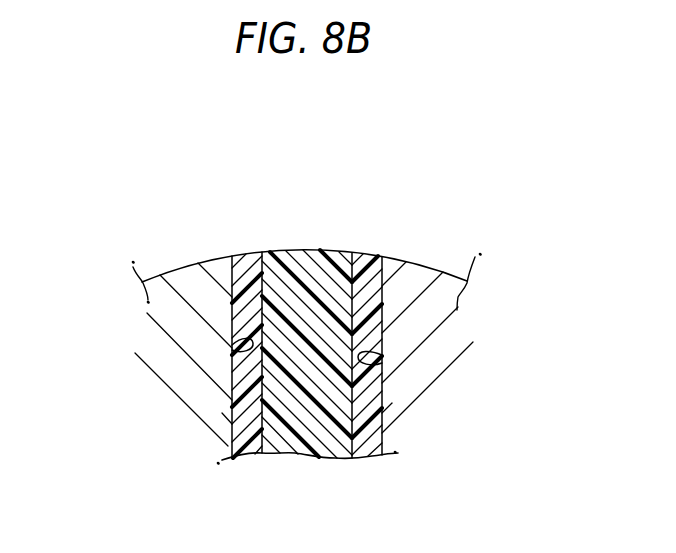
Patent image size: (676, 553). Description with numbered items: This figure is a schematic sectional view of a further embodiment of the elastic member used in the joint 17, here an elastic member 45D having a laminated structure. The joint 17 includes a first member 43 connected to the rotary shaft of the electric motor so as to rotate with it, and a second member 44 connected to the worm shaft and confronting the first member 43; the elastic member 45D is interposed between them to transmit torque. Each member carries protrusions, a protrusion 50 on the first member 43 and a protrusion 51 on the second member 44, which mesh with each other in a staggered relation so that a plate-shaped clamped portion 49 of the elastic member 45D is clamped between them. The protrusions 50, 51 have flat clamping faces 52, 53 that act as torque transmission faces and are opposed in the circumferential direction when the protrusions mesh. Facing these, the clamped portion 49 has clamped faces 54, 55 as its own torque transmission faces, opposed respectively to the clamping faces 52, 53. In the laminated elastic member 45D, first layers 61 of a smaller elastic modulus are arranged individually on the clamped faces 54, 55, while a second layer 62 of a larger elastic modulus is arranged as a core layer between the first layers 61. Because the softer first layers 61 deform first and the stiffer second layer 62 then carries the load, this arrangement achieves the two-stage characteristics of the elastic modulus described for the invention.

The joint 17 is at (413, 176).
The first member 43 is at (204, 257).
The second member 44 is at (422, 253).
The elastic member 45D is at (400, 200).
The clamped portion 49 is at (303, 433).
The protrusion 50 is at (188, 285).
The protrusion 51 is at (423, 280).
The clamping face 52 is at (232, 350).
The clamping face 53 is at (382, 363).
The clamped face 54 is at (230, 417).
The clamped face 55 is at (382, 413).
The first layer 61 is at (252, 253).
The second layer 62 is at (305, 255).